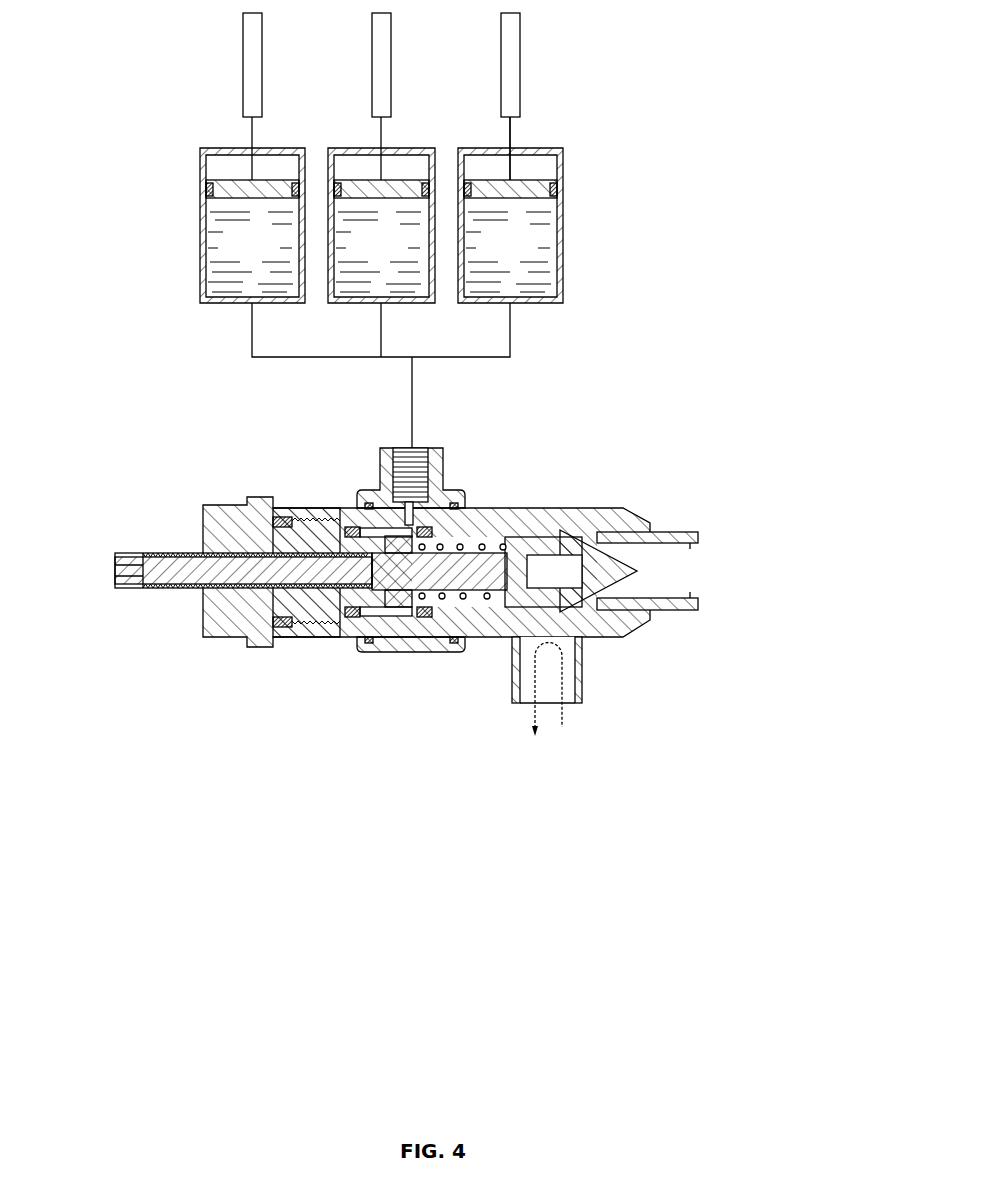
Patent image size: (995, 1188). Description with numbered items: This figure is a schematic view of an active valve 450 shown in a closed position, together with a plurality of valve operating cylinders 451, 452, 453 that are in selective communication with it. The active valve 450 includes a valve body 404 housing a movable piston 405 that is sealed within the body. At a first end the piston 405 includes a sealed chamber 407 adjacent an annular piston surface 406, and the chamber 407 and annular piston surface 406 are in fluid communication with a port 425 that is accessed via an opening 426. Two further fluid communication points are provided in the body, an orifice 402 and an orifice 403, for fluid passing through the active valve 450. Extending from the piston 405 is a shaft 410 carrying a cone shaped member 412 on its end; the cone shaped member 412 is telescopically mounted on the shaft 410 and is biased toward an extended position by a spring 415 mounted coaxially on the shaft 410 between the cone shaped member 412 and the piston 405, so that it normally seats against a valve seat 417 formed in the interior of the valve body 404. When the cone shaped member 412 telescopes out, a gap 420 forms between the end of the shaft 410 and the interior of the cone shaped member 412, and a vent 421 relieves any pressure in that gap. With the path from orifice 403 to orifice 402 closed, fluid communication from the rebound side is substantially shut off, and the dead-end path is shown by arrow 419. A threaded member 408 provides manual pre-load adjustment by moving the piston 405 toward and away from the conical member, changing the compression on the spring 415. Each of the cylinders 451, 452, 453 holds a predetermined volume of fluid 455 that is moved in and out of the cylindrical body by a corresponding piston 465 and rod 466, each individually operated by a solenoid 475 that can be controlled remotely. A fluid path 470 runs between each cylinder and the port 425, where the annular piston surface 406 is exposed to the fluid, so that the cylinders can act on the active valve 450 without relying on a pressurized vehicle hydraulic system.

The orifice 402 is at (660, 548).
The orifice 403 is at (525, 695).
The valve body 404 is at (210, 515).
The piston 405 is at (443, 600).
The annular piston surface 406 is at (410, 608).
The sealed chamber 407 is at (393, 528).
The threaded member 408 is at (176, 590).
The shaft 410 is at (462, 567).
The cone shaped member 412 is at (650, 585).
The spring 415 is at (452, 612).
The valve seat 417 is at (583, 553).
The arrow 419 is at (565, 677).
The gap 420 is at (548, 572).
The vent 421 is at (557, 538).
The port 425 is at (402, 450).
The opening 426 is at (414, 510).
The active valve 450 is at (722, 487).
The valve operating cylinder 451 is at (203, 208).
The valve operating cylinder 452 is at (365, 305).
The valve operating cylinder 453 is at (565, 250).
The fluid 455 is at (379, 252).
The piston 465 is at (225, 182).
The rod 466 is at (515, 133).
The fluid path 470 is at (412, 367).
The solenoid 475 is at (508, 52).